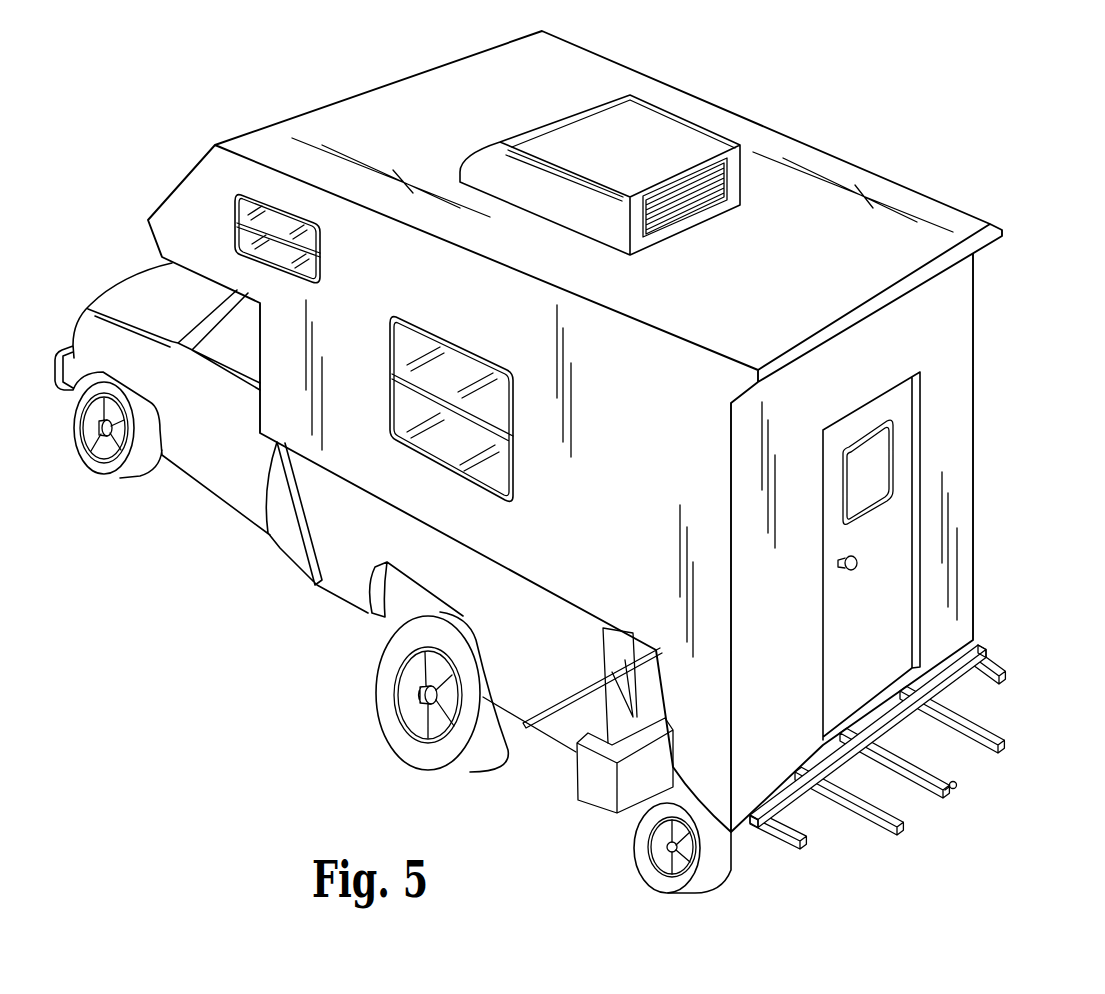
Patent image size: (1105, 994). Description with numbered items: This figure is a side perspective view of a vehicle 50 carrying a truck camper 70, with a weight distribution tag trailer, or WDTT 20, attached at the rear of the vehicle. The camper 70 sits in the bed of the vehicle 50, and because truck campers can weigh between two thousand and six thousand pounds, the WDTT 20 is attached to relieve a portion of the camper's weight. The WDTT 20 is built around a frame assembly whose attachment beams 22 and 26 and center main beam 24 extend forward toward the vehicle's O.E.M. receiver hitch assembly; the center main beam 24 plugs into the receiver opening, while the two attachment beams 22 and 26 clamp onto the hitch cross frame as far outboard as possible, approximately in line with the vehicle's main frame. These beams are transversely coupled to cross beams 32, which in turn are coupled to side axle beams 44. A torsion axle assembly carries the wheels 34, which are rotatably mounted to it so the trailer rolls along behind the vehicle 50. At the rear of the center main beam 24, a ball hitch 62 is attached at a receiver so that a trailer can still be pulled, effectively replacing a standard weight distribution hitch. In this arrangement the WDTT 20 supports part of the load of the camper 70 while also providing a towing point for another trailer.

The weight distribution tag trailer 20 is at (638, 885).
The attachment beam 22 is at (899, 828).
The center main beam 24 is at (913, 762).
The attachment beam 26 is at (1000, 744).
The cross beam 32 is at (798, 802).
The wheel assembly 34 is at (643, 843).
The side axle beam 44 is at (788, 840).
The vehicle 50 is at (333, 568).
The ball hitch 62 is at (955, 790).
The truck camper 70 is at (947, 383).